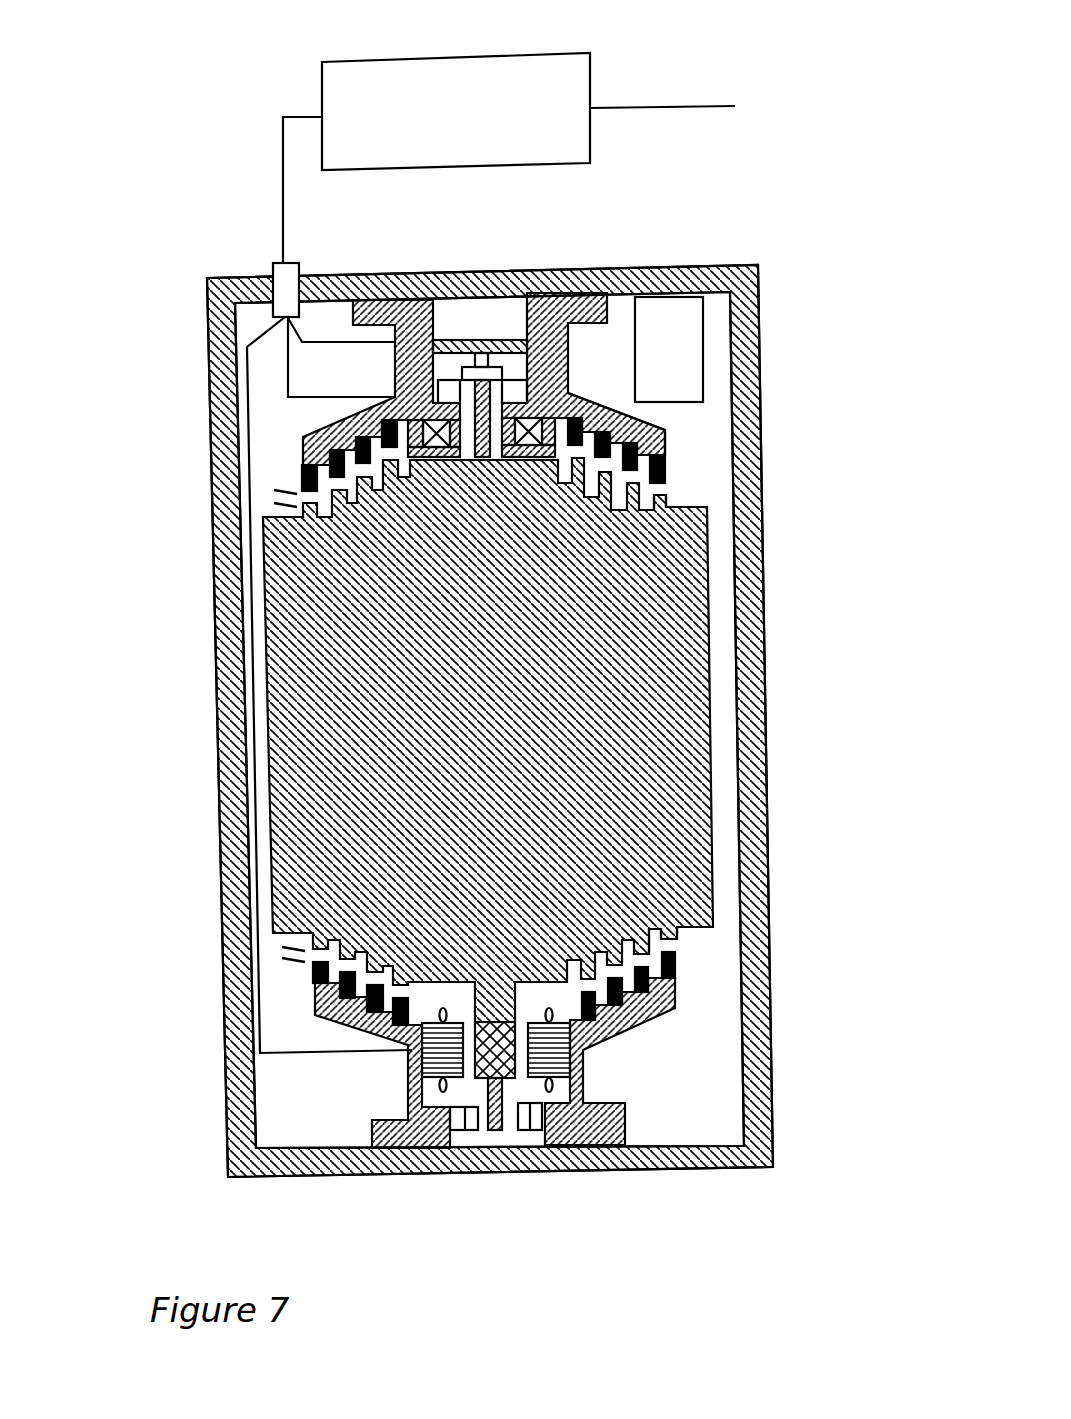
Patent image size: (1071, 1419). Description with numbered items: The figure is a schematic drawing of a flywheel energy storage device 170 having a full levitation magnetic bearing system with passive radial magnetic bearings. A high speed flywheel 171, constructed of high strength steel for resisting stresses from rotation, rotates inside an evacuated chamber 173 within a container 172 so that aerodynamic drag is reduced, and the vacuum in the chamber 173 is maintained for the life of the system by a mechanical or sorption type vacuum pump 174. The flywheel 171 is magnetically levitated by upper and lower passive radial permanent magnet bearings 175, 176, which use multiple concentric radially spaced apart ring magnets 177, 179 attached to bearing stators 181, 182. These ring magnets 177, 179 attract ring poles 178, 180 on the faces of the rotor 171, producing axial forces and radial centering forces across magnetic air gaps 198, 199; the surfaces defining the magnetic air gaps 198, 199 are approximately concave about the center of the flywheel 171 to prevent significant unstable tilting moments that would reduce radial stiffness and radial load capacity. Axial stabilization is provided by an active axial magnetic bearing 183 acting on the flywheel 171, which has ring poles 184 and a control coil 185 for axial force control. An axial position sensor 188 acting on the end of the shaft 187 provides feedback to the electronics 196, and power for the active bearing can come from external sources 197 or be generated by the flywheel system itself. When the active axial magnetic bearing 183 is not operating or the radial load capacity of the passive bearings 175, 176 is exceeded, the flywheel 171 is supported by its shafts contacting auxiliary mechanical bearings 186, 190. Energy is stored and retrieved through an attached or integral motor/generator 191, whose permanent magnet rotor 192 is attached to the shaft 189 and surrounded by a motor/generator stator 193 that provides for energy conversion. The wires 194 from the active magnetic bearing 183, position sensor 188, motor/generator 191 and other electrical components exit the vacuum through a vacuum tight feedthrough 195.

The flywheel energy storage device 170 is at (120, 88).
The flywheel 171 is at (712, 768).
The container 172 is at (759, 855).
The evacuated chamber 173 is at (722, 1120).
The vacuum pump 174 is at (703, 350).
The upper passive radial permanent magnet bearing 175 is at (286, 480).
The lower passive radial permanent magnet bearing 176 is at (290, 978).
The ring magnets 177 is at (665, 462).
The ring poles 178 is at (665, 497).
The ring magnets 179 is at (677, 960).
The ring poles 180 is at (676, 941).
The bearing stator 181 is at (668, 432).
The bearing stator 182 is at (665, 1010).
The active axial magnetic bearing 183 is at (602, 367).
The ring poles 184 is at (414, 436).
The control coil 185 is at (428, 430).
The auxiliary mechanical bearing 186 is at (478, 362).
The shaft 187 is at (490, 390).
The axial position sensor 188 is at (470, 358).
The shaft 189 is at (497, 1136).
The auxiliary mechanical bearing 190 is at (540, 1132).
The motor/generator 191 is at (592, 1062).
The permanent magnet rotor 192 is at (487, 1078).
The motor/generator stator 193 is at (556, 1080).
The wires 194 is at (283, 214).
The vacuum tight feedthrough 195 is at (273, 268).
The electronics 196 is at (448, 53).
The external sources 197 is at (704, 106).
The magnetic air gap 198 is at (262, 500).
The magnetic air gap 199 is at (272, 955).